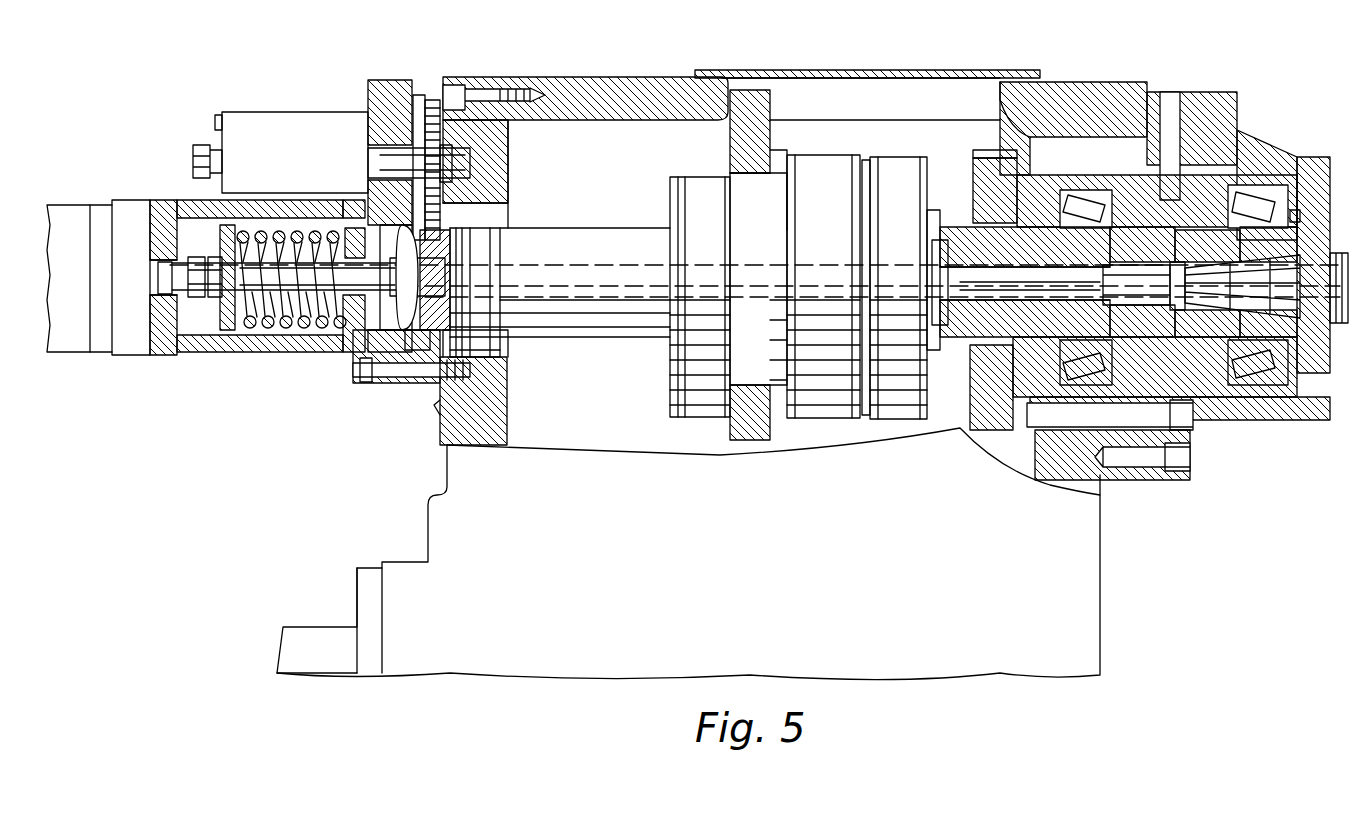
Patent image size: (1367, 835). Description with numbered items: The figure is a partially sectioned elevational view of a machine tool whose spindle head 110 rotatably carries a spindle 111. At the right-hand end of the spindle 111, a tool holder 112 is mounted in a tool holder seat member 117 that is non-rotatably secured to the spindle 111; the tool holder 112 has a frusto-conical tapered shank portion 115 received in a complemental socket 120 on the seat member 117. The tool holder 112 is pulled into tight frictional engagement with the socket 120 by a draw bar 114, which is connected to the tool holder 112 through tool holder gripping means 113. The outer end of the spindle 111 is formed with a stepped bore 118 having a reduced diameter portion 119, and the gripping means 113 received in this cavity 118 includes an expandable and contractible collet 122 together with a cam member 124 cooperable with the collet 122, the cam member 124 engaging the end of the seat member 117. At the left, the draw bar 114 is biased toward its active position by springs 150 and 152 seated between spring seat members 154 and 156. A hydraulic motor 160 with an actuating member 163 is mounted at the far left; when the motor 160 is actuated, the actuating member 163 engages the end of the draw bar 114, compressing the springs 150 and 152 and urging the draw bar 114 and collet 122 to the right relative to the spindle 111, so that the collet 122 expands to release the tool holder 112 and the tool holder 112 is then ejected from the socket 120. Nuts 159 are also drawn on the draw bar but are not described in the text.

The spindle head 110 is at (588, 72).
The spindle 111 is at (1334, 196).
The tool holder 112 is at (1343, 325).
The tool holder gripping means 113 is at (1124, 302).
The draw bar 114 is at (980, 292).
The tapered shank portion 115 is at (1312, 294).
The tool holder seat member 117 is at (1318, 220).
The stepped bore 118 is at (1170, 272).
The reduced diameter portion 119 is at (1092, 262).
The socket 120 is at (1290, 278).
The collet 122 is at (1140, 312).
The cam member 124 is at (1210, 324).
The spring 150 is at (278, 327).
The spring 152 is at (300, 234).
The spring seat member 154 is at (228, 332).
The spring seat member 156 is at (352, 332).
The nuts 159 is at (200, 300).
The hydraulic motor 160 is at (117, 196).
The actuating member 163 is at (156, 256).